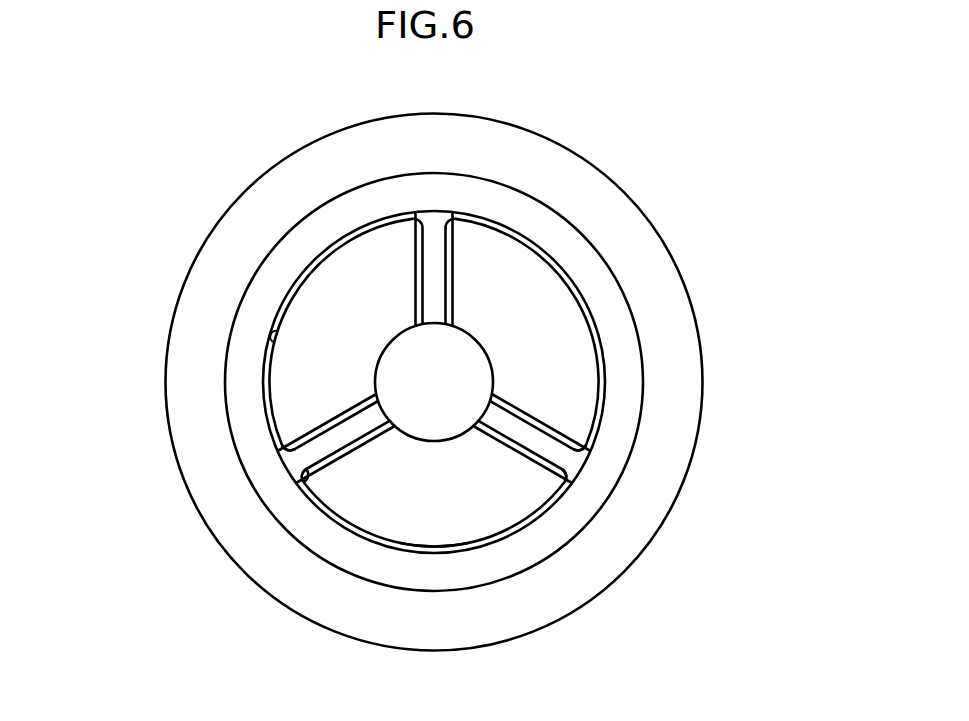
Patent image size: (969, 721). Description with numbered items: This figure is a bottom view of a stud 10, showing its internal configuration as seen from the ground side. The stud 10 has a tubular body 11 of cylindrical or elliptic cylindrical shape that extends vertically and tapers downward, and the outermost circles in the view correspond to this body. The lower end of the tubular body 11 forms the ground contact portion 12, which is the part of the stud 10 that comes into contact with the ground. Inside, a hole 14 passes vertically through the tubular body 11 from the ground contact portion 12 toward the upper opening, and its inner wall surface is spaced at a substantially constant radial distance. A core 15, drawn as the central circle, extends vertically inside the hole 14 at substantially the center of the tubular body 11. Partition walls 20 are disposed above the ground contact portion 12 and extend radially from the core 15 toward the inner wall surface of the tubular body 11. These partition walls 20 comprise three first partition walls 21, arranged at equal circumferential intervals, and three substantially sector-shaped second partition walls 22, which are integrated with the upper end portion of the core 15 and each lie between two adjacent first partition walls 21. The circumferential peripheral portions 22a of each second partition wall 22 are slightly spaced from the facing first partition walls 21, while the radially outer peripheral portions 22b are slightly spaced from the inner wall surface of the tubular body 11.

The stud 10 is at (671, 177).
The tubular body 11 is at (678, 411).
The ground contact portion 12 is at (612, 330).
The hole 14 is at (273, 350).
The core 15 is at (430, 439).
The partition walls 20 is at (420, 380).
The first partition wall 21 is at (447, 275).
The second partition wall 22 is at (290, 297).
The peripheral portion 22a is at (297, 462).
The radially outer peripheral portion 22b is at (447, 548).